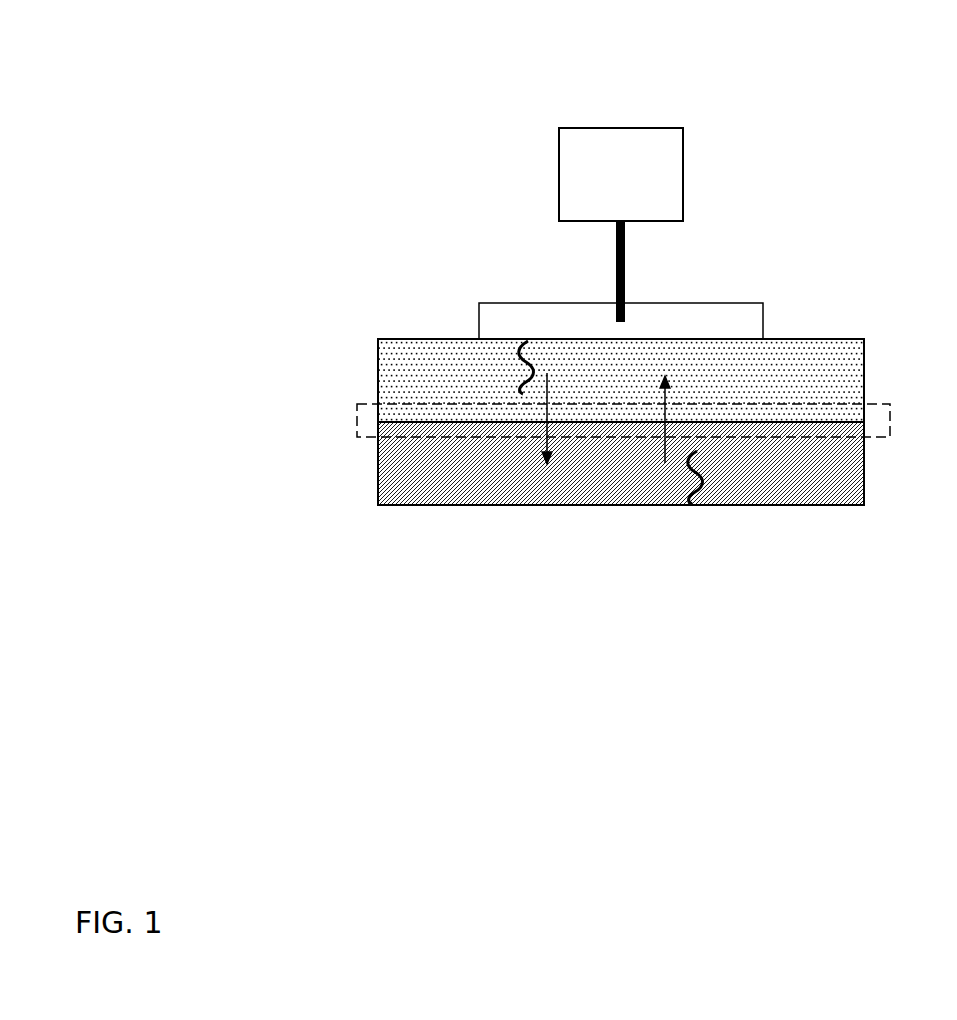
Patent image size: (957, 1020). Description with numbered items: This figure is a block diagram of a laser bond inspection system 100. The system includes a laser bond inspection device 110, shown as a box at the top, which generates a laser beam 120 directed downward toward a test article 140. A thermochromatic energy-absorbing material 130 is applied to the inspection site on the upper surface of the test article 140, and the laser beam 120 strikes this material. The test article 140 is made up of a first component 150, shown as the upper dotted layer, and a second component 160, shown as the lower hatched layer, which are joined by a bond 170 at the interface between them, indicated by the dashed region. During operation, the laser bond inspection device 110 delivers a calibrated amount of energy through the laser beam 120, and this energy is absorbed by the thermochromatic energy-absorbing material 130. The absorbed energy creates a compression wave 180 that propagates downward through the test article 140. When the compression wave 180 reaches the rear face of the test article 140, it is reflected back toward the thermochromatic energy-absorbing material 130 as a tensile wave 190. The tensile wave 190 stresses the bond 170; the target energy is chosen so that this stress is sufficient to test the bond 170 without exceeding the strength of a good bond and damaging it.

The laser bond inspection system 100 is at (206, 117).
The laser bond inspection device 110 is at (688, 180).
The laser beam 120 is at (616, 269).
The thermochromatic energy-absorbing material 130 is at (747, 314).
The test article 140 is at (337, 357).
The first component 150 is at (840, 370).
The second component 160 is at (855, 487).
The bond 170 is at (355, 433).
The compression wave 180 is at (488, 358).
The tensile wave 190 is at (715, 470).